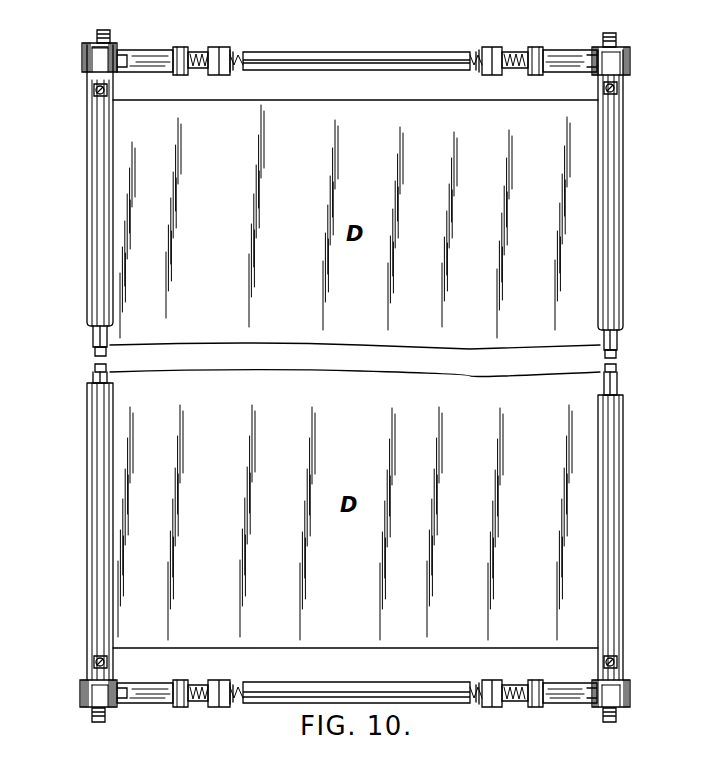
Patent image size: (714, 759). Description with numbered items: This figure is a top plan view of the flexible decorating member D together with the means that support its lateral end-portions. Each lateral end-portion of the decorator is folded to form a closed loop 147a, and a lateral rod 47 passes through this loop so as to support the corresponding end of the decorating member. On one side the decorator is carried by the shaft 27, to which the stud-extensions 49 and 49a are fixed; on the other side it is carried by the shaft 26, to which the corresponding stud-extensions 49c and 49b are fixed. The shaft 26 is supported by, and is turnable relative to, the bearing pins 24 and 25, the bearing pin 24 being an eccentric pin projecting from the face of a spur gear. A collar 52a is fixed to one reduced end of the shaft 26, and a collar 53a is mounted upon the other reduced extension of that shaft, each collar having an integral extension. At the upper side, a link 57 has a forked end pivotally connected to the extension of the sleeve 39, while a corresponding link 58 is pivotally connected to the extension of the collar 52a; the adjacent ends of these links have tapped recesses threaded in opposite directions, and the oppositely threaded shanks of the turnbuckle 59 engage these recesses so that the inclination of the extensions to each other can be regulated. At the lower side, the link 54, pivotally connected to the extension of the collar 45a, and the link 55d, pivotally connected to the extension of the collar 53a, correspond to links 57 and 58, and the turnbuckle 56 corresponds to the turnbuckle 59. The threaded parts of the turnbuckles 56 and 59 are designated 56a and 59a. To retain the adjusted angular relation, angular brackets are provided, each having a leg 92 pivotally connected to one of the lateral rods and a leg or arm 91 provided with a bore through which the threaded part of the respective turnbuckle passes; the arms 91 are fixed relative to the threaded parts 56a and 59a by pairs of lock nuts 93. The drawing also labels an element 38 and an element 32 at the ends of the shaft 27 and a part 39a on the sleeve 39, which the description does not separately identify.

The bearing pin 24 is at (616, 715).
The bearing pin 25 is at (616, 38).
The shaft 26 is at (623, 232).
The shaft 27 is at (87, 232).
The bolt 32 is at (92, 715).
The bolt 38 is at (97, 35).
The sleeve 39 is at (82, 62).
The bracket flange 39a is at (88, 47).
The collar 45a is at (80, 690).
The lateral rod 47 is at (95, 366).
The stud-extension 49 is at (95, 90).
The stud-extension 49a is at (96, 660).
The stud-extension 49b is at (612, 664).
The stud-extension 49c is at (612, 88).
The collar 52a is at (630, 62).
The collar 53a is at (630, 690).
The link 54 is at (150, 703).
The link 55d is at (566, 703).
The turnbuckle 56 is at (362, 690).
The threaded part of turnbuckle 56a is at (197, 685).
The link 57 is at (145, 57).
The link 58 is at (565, 58).
The turnbuckle 59 is at (370, 55).
The threaded part of turnbuckle 59a is at (197, 52).
The leg of bracket 91 is at (222, 47).
The leg of bracket 92 is at (182, 75).
The lock nuts 93 is at (231, 72).
The closed loop 147a is at (93, 338).